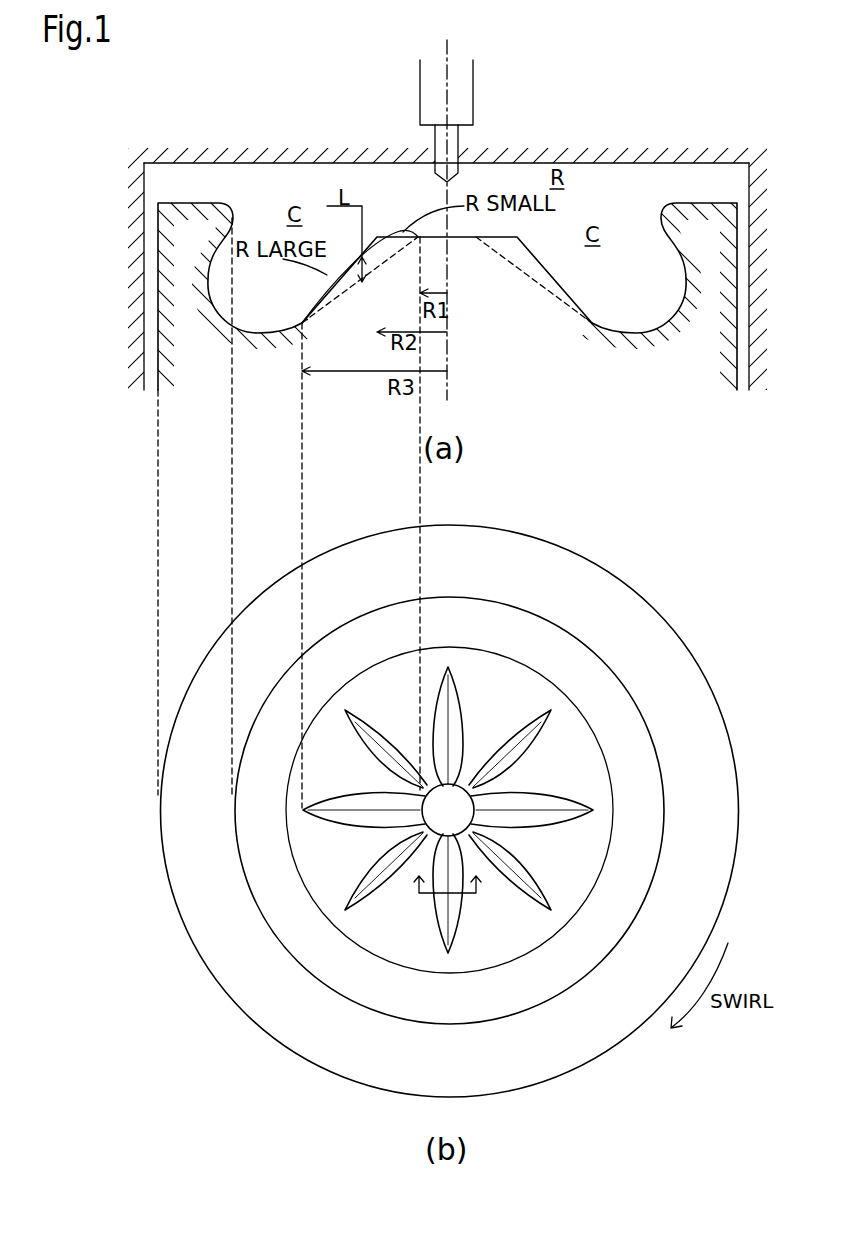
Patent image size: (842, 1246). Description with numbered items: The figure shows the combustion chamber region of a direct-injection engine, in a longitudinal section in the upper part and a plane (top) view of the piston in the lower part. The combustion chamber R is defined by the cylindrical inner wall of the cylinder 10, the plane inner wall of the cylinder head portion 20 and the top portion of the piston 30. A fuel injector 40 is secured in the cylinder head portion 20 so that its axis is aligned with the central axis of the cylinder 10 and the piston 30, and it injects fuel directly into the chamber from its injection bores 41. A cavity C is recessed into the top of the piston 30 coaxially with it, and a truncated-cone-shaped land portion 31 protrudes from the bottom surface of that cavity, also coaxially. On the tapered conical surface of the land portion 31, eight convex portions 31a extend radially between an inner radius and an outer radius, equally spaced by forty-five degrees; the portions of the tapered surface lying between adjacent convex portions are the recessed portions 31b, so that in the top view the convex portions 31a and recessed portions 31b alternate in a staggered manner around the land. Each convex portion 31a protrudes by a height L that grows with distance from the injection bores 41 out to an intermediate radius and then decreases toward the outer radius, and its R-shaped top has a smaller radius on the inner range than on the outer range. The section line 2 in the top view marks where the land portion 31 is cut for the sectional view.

The cylinder 10 is at (130, 256).
The cylinder head portion 20 is at (277, 162).
The piston 30 is at (215, 385).
The land portion 31 is at (484, 292).
The convex portion 31a is at (392, 245).
The recessed portion 31b is at (362, 775).
The fuel injector 40 is at (474, 80).
The injection bores 41 is at (459, 175).
The section line 2 is at (449, 886).